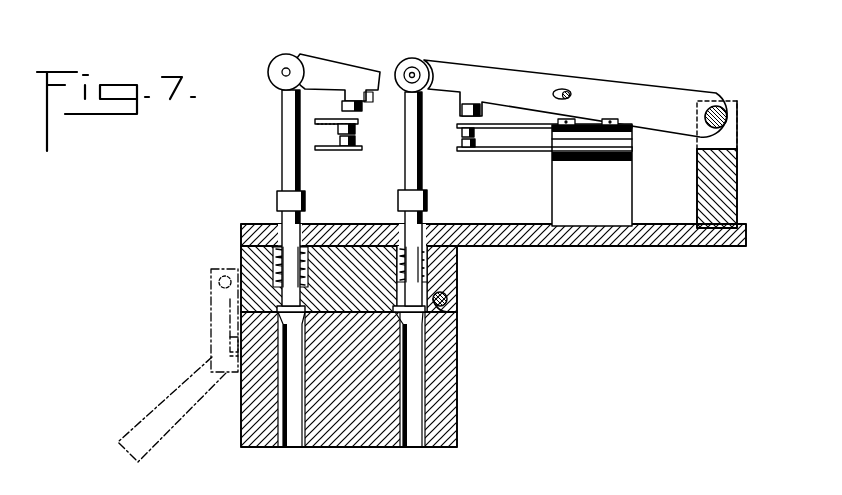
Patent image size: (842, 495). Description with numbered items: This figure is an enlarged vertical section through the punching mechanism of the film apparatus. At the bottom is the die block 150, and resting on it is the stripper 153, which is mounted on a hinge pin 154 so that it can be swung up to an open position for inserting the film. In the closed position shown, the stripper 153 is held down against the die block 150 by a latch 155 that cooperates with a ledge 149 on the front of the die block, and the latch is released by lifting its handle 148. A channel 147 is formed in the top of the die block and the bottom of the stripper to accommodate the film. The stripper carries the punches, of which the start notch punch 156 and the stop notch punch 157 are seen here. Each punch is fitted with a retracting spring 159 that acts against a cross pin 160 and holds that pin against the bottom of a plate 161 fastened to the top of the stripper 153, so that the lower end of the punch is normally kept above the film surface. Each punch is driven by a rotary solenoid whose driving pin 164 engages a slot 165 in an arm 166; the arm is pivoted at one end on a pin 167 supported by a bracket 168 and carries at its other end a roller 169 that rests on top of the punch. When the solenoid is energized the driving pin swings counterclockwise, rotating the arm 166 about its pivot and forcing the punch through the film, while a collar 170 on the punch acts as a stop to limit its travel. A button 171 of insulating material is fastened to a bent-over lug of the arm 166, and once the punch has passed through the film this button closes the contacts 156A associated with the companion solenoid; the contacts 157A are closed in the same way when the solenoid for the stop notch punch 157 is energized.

The channel 147 is at (415, 325).
The handle 148 is at (150, 460).
The ledge 149 is at (230, 348).
The die block 150 is at (457, 378).
The stripper 153 is at (448, 299).
The hinge pin 154 is at (448, 310).
The latch 155 is at (211, 303).
The start notch punch 156 is at (425, 223).
The contacts 156A is at (470, 150).
The stop notch punch 157 is at (303, 221).
The contacts 157A is at (345, 150).
The retracting spring 159 is at (427, 275).
The cross pin 160 is at (457, 262).
The plate 161 is at (580, 250).
The driving pin 164 is at (570, 95).
The slot 165 is at (558, 92).
The arm 166 is at (335, 61).
The pin 167 is at (728, 118).
The bracket 168 is at (737, 193).
The roller 169 is at (289, 55).
The collar 170 is at (277, 201).
The button 171 is at (362, 110).